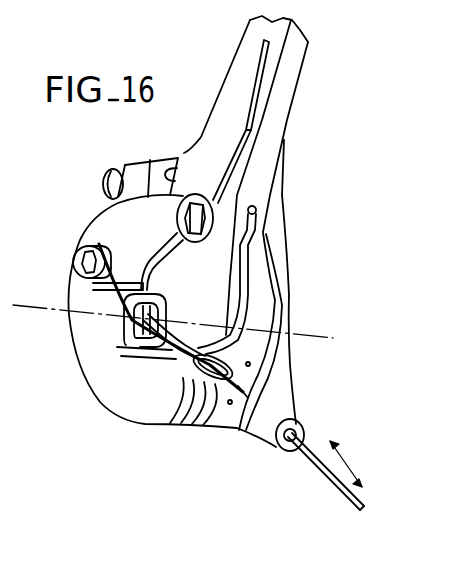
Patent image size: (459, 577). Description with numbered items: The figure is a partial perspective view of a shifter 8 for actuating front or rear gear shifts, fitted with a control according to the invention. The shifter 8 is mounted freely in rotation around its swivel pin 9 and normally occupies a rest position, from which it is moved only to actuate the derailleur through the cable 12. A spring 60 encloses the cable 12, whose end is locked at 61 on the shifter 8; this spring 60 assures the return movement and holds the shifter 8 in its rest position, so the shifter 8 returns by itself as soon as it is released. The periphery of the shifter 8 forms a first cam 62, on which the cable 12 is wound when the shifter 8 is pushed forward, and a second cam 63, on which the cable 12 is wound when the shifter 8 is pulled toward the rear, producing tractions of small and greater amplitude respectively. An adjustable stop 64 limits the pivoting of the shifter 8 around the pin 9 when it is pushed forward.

The shifter 8 is at (282, 107).
The swivel pin 9 is at (173, 310).
The cable 12 is at (327, 483).
The spring 60 is at (142, 353).
The cable end locking point 61 is at (205, 218).
The first cam 62 is at (197, 412).
The second cam 63 is at (248, 288).
The adjustable stop 64 is at (143, 173).